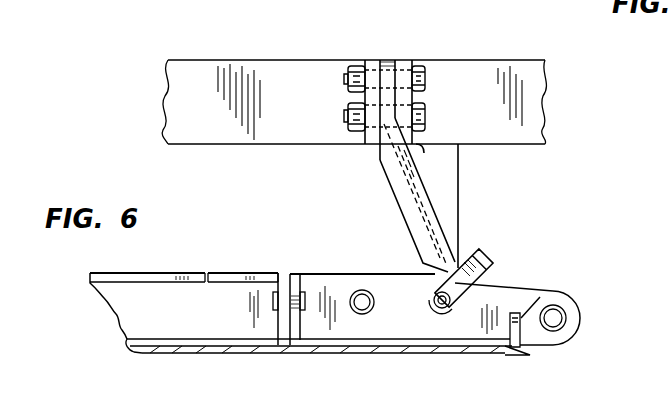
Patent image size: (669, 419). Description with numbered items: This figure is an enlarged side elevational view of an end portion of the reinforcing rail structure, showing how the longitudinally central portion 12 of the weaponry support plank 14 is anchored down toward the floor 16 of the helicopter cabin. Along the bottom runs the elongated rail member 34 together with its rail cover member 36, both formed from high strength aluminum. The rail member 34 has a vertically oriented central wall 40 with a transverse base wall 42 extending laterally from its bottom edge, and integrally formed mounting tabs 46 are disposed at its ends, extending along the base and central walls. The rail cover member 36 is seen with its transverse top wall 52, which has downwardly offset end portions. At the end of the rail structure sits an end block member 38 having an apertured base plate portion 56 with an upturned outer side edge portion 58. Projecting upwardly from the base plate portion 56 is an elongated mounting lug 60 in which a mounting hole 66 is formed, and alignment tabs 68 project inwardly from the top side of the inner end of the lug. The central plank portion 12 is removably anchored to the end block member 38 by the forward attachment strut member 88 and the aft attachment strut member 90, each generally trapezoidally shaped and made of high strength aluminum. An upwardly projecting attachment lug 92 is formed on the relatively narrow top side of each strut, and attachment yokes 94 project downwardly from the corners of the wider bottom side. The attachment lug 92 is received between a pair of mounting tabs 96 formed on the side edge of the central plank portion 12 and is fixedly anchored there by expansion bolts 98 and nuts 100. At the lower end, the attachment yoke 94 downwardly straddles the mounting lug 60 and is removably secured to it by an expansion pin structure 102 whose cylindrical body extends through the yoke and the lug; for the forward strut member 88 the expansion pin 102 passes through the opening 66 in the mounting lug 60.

The longitudinally central portion 12 is at (498, 60).
The weaponry support plank 14 is at (548, 80).
The floor 16 is at (211, 349).
The rail member 34 is at (118, 294).
The rail cover member 36 is at (124, 272).
The end block member 38 is at (537, 282).
The central wall 40 is at (171, 313).
The base wall 42 is at (124, 333).
The mounting tabs 46 is at (285, 273).
The top wall 52 is at (158, 273).
The base plate portion 56 is at (368, 343).
The upturned outer side edge portion 58 is at (556, 291).
The first elongated mounting lug 60 is at (492, 292).
The mounting hole 66 is at (366, 290).
The alignment tabs 68 is at (226, 273).
The forward attachment strut member 88 is at (459, 172).
The aft attachment strut member 90 is at (433, 197).
The attachment lug 92 is at (388, 60).
The attachment yoke 94 is at (433, 293).
The mounting tabs 96 is at (369, 60).
The expansion bolts 98 is at (426, 64).
The nuts 100 is at (355, 64).
The expansion pin structure 102 is at (446, 311).